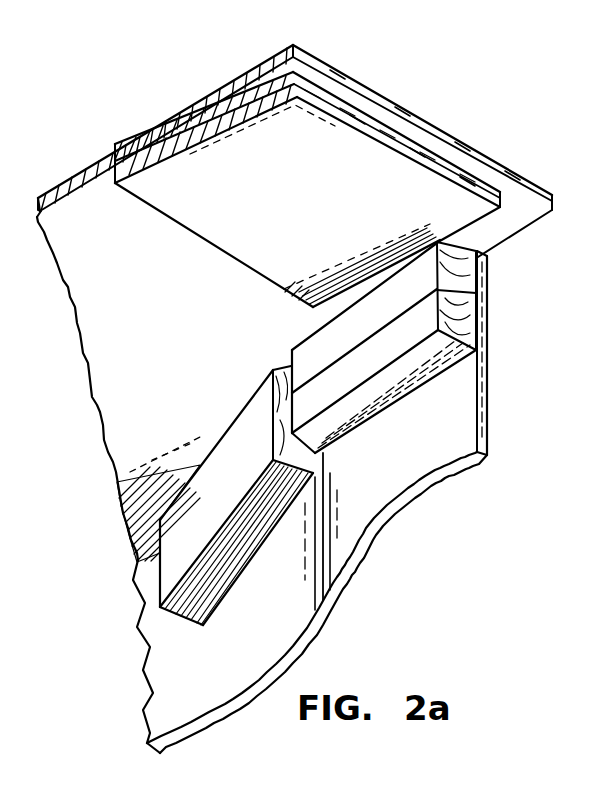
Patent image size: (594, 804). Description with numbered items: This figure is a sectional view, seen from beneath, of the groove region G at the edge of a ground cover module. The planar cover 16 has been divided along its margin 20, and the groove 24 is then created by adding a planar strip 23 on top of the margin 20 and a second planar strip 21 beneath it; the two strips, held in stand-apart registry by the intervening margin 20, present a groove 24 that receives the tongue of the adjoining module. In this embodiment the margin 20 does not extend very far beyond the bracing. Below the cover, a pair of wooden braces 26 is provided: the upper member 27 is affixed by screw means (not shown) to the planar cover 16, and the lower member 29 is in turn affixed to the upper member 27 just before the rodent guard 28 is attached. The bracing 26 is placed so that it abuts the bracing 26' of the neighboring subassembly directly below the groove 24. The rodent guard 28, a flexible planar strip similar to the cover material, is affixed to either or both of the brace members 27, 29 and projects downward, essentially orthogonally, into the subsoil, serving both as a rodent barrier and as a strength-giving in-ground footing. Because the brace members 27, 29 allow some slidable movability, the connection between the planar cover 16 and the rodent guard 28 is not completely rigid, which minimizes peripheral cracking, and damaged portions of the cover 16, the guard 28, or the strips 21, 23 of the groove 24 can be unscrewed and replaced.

The planar cover 16 is at (138, 318).
The margin 20 is at (224, 106).
The planar strip 21 is at (278, 204).
The planar strip 23 is at (426, 128).
The groove 24 is at (362, 107).
The pair of wooden braces 26 is at (158, 569).
The bracing 26' is at (490, 296).
The upper member 27 is at (364, 320).
The rodent guard 28 is at (430, 453).
The lower member 29 is at (347, 376).